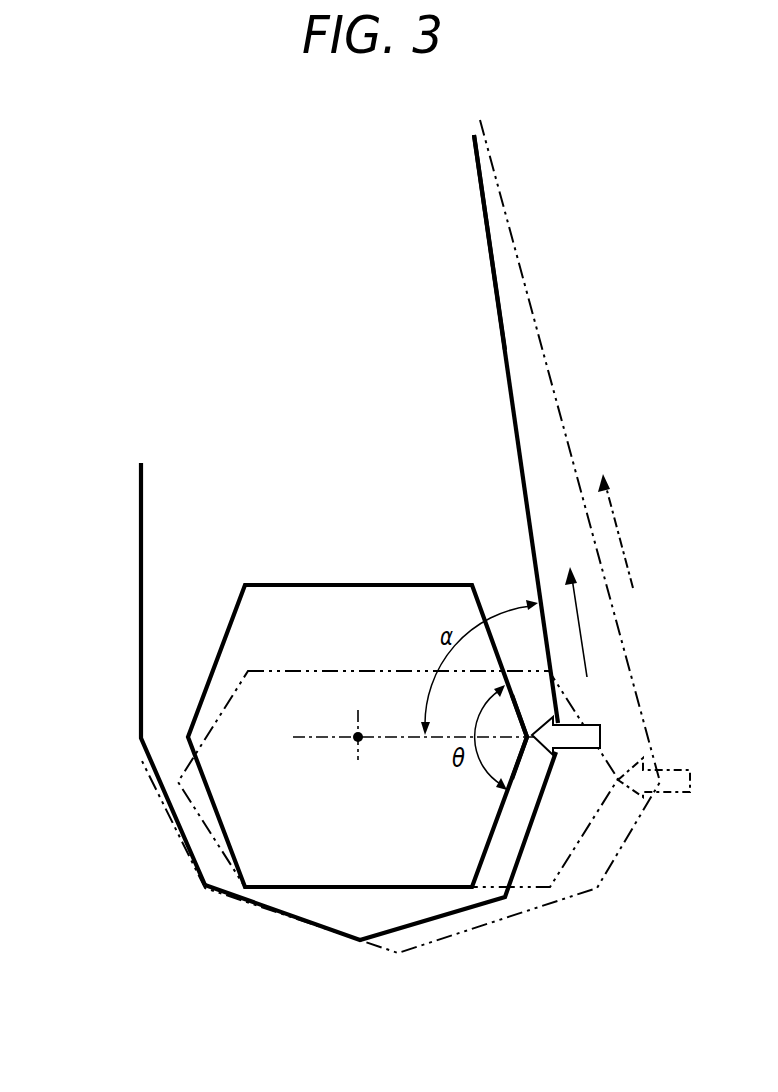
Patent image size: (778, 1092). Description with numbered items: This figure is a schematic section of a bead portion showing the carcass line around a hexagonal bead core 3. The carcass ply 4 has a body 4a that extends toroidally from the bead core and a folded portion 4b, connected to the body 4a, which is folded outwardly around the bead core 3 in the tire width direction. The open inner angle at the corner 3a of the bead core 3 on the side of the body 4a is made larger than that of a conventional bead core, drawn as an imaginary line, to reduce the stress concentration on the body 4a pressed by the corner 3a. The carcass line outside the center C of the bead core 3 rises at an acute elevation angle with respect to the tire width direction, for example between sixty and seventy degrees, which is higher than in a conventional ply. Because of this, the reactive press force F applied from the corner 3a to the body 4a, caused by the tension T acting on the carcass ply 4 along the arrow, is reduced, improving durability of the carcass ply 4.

The bead core 3 is at (329, 578).
The corner of the bead core 3a is at (527, 737).
The carcass ply 4 is at (503, 382).
The body of the carcass ply 4a is at (485, 210).
The folded portion of the carcass ply 4b is at (140, 528).
The center of the bead core C is at (353, 742).
The reactive press force F is at (576, 736).
The tension T is at (580, 632).